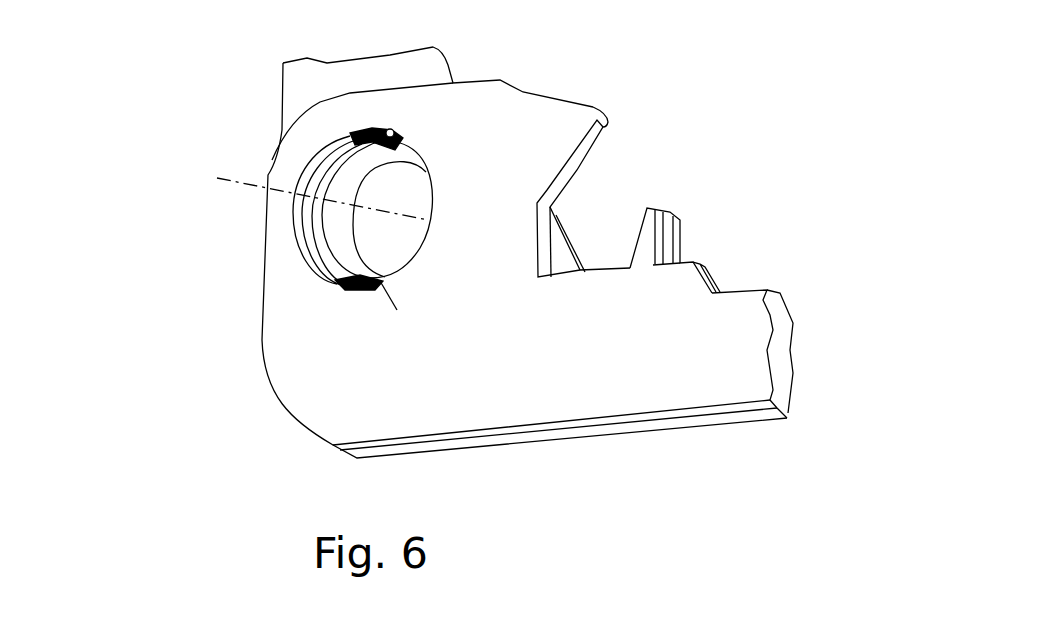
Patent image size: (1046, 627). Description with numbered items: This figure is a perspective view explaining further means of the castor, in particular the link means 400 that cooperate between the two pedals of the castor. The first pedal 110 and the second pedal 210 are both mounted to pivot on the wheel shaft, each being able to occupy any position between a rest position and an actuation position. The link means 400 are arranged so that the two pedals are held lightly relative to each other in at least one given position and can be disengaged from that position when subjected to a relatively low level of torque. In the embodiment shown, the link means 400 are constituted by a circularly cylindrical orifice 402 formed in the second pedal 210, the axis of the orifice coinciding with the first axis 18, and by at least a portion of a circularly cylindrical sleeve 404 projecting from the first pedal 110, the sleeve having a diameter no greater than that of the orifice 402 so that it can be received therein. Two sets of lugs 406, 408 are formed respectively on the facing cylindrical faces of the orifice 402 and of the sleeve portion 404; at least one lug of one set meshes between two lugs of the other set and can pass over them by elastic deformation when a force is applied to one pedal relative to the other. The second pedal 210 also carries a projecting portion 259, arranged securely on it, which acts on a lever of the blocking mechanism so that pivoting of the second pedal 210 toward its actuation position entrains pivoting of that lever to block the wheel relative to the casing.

The first axis 18 is at (217, 177).
The first pedal 110 is at (568, 236).
The second pedal 210 is at (543, 372).
The projecting portion 259 is at (543, 118).
The link means 400 is at (323, 178).
The circularly cylindrical orifice 402 is at (308, 231).
The circularly cylindrical sleeve 404 is at (375, 167).
The set of lugs 406 is at (335, 280).
The set of lugs 408 is at (352, 137).